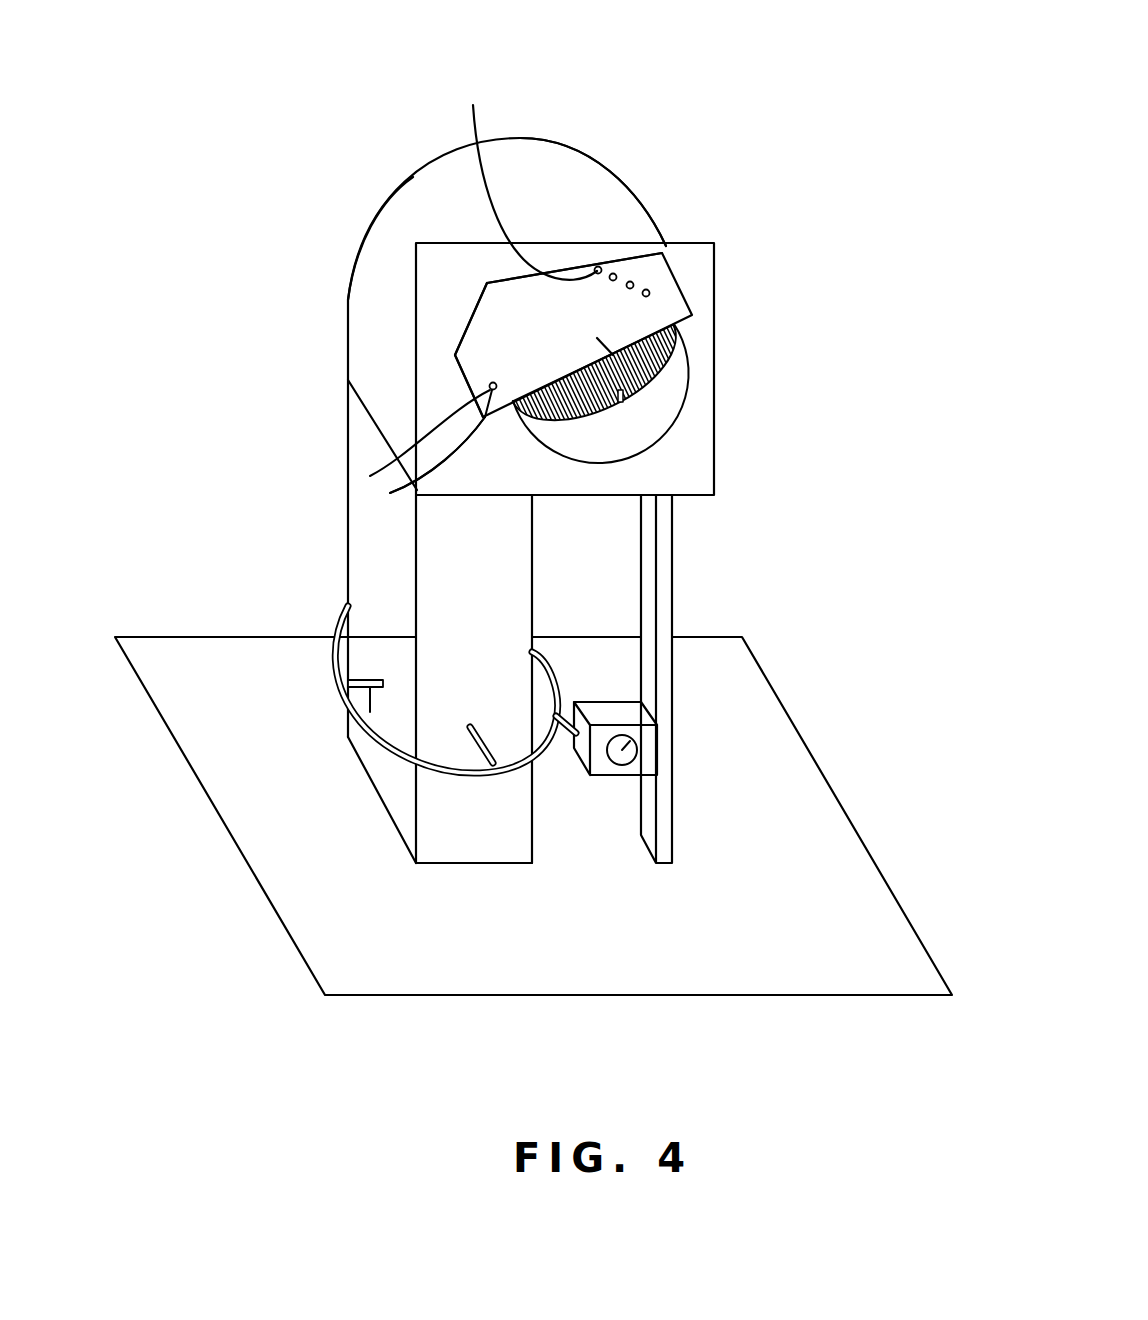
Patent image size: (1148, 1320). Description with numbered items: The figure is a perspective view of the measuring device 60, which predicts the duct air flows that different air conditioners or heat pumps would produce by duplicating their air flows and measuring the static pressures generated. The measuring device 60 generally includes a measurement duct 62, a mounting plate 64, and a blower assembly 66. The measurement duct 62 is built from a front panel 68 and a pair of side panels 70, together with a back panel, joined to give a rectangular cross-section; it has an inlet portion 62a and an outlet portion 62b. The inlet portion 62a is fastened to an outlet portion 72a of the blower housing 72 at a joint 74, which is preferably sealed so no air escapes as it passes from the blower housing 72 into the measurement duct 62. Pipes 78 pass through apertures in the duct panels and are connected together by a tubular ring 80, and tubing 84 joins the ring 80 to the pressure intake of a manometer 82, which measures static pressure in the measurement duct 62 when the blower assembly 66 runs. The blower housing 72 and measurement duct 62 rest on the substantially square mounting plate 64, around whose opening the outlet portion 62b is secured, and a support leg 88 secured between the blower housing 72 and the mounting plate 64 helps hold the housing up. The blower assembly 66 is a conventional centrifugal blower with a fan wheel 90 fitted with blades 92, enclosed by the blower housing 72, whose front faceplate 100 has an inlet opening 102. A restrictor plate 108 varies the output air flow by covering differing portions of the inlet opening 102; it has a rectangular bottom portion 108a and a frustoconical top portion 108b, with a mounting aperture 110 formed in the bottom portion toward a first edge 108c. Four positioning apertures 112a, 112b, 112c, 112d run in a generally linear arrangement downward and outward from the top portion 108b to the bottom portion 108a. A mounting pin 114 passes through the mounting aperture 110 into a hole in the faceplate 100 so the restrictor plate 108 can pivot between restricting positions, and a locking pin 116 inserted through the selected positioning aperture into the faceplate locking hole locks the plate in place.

The measuring device 60 is at (737, 115).
The measurement duct 62 is at (330, 590).
The inlet portion 62a is at (355, 442).
The outlet portion 62b is at (468, 852).
The mounting plate 64 is at (812, 800).
The blower assembly 66 is at (367, 200).
The front panel 68 is at (490, 578).
The side panels 70 is at (360, 552).
The blower housing 72 is at (520, 138).
The outlet portion 72a is at (373, 365).
The joint 74 is at (415, 422).
The pipes 78 is at (370, 688).
The tubular ring 80 is at (408, 757).
The manometer 82 is at (646, 742).
The tubing 84 is at (571, 728).
The support leg 88 is at (668, 553).
The fan wheel 90 is at (642, 395).
The blades 92 is at (622, 400).
The front faceplate 100 is at (703, 270).
The inlet opening 102 is at (610, 425).
The restrictor plate 108 is at (697, 297).
The bottom portion 108a is at (594, 362).
The top portion 108b is at (500, 300).
The first edge 108c is at (457, 367).
The mounting aperture 110 is at (490, 390).
The positioning aperture 112a is at (598, 269).
The positioning aperture 112b is at (613, 276).
The positioning aperture 112c is at (630, 284).
The positioning aperture 112d is at (647, 291).
The mounting pin 114 is at (390, 493).
The locking pin 116 is at (524, 176).